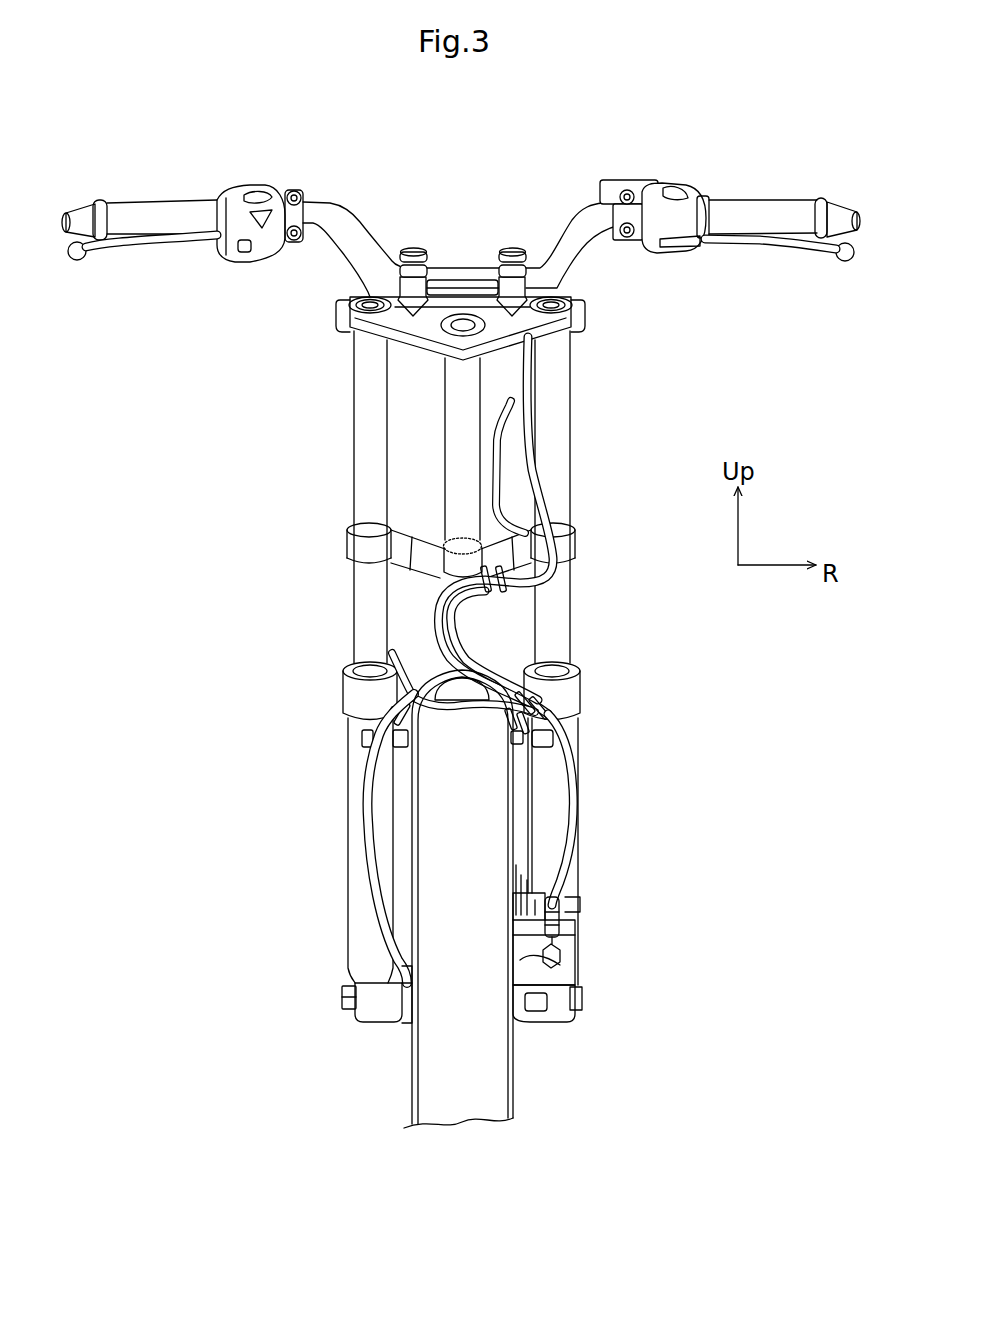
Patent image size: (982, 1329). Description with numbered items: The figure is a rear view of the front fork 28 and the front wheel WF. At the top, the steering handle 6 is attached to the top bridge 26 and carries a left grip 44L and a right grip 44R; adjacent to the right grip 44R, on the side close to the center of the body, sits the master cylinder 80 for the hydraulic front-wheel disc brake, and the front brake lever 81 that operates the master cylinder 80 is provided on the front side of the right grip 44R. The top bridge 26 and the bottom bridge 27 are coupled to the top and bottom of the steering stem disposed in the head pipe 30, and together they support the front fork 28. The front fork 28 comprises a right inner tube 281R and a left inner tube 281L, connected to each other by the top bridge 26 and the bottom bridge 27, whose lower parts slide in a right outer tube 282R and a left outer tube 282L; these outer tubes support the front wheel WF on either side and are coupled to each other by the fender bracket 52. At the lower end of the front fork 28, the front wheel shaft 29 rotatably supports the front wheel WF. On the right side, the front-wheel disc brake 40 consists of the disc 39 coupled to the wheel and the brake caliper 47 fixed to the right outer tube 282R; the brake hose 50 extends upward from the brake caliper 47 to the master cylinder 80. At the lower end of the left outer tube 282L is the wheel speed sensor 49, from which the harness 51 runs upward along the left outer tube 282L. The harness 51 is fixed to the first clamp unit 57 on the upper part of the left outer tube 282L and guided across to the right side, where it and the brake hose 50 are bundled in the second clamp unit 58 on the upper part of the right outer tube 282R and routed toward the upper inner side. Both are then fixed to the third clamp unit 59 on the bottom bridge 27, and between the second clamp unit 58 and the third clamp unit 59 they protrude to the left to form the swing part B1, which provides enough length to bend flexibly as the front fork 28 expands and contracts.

The steering handle 6 is at (333, 217).
The left grip 44L is at (150, 211).
The right grip 44R is at (737, 202).
The master cylinder 80 is at (610, 190).
The front brake lever 81 is at (782, 244).
The top bridge 26 is at (413, 336).
The left inner tube 281L is at (363, 444).
The right inner tube 281R is at (558, 444).
The head pipe 30 is at (457, 465).
The bottom bridge 27 is at (358, 544).
The swing part B1 is at (428, 606).
The third clamp unit 59 is at (508, 597).
The second clamp unit 58 is at (560, 701).
The first clamp unit 57 is at (386, 711).
The fender bracket 52 is at (388, 645).
The front fork 28 is at (445, 870).
The left outer tube 282L is at (363, 893).
The right outer tube 282R is at (552, 786).
The harness 51 is at (363, 795).
The brake hose 50 is at (572, 816).
The front wheel shaft 29 is at (344, 994).
The wheel speed sensor 49 is at (403, 1020).
The front wheel WF is at (423, 1076).
The front-wheel disc brake 40 is at (602, 958).
The brake caliper 47 is at (516, 985).
The disc 39 is at (517, 1052).